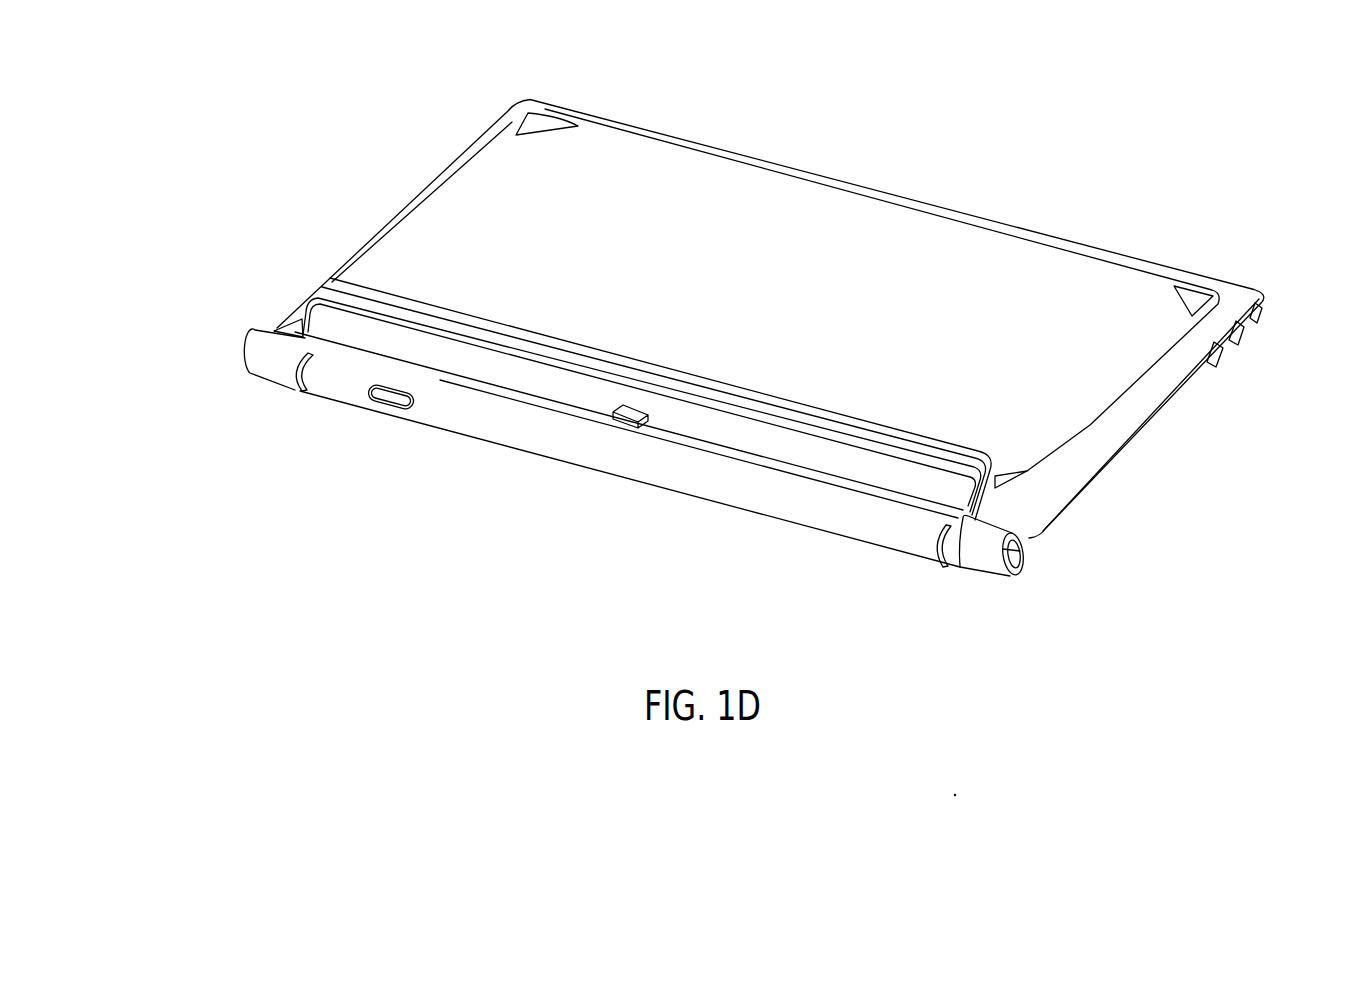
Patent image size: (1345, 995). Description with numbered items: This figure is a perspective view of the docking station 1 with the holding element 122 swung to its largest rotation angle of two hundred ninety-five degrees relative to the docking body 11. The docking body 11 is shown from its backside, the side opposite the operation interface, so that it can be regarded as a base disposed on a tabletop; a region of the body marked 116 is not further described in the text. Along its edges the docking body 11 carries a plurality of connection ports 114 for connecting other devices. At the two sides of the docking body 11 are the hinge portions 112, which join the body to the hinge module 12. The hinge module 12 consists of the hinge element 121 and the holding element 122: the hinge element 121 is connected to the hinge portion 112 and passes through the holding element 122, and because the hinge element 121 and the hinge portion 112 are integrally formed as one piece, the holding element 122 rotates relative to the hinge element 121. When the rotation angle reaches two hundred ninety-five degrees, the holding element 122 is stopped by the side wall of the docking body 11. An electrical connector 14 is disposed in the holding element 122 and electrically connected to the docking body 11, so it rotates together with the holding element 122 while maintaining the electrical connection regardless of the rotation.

The docking station 1 is at (897, 150).
The docking body 11 is at (1254, 282).
The hinge portion 112 is at (272, 357).
The connection ports 114 is at (1216, 360).
The accommodating recess 116 is at (1119, 286).
The hinge module 12 is at (1035, 625).
The hinge element 121 is at (1020, 570).
The holding element 122 is at (908, 530).
The electrical connector 14 is at (634, 405).